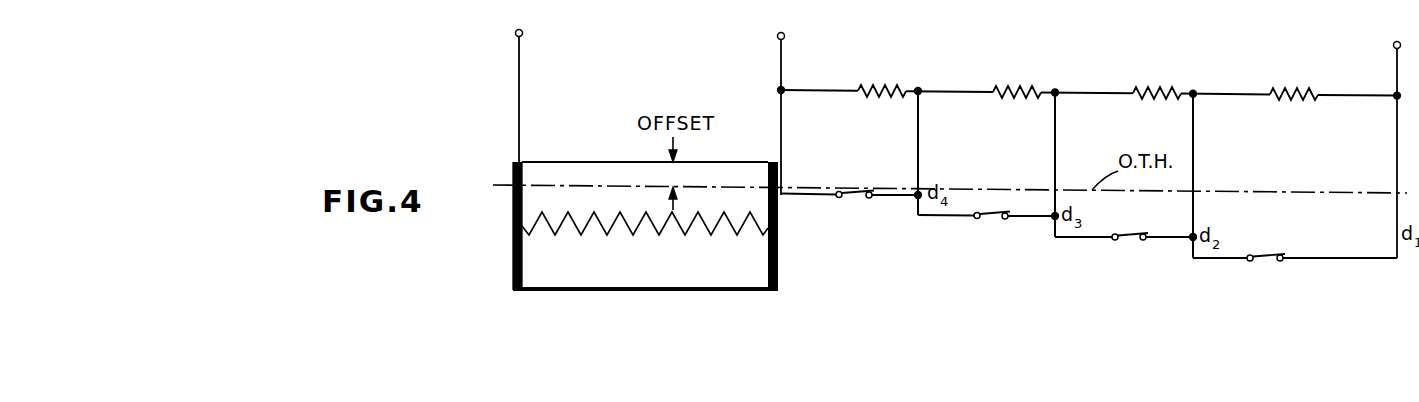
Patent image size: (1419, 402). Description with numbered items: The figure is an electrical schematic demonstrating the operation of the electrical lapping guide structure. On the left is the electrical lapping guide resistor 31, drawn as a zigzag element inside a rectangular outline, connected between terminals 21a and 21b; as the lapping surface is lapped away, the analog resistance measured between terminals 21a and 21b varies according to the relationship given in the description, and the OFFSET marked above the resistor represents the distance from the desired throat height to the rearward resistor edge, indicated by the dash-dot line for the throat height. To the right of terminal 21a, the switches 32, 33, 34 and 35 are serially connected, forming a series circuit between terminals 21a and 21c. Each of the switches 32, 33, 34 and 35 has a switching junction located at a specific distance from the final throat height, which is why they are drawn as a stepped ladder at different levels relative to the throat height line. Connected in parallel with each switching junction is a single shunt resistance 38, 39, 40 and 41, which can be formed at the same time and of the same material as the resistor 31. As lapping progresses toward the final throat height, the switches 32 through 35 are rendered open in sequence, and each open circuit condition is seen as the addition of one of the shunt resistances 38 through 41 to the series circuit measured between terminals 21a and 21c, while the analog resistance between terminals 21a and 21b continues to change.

The terminal 21a is at (784, 36).
The terminal 21b is at (522, 33).
The terminal 21c is at (1394, 43).
The electrical lapping guide resistor 31 is at (660, 213).
The switch 32 is at (1265, 259).
The switch 33 is at (1130, 237).
The switch 34 is at (990, 215).
The switch 35 is at (855, 193).
The shunt resistance 38 is at (1316, 92).
The shunt resistance 39 is at (1179, 91).
The shunt resistance 40 is at (1037, 89).
The shunt resistance 41 is at (900, 89).